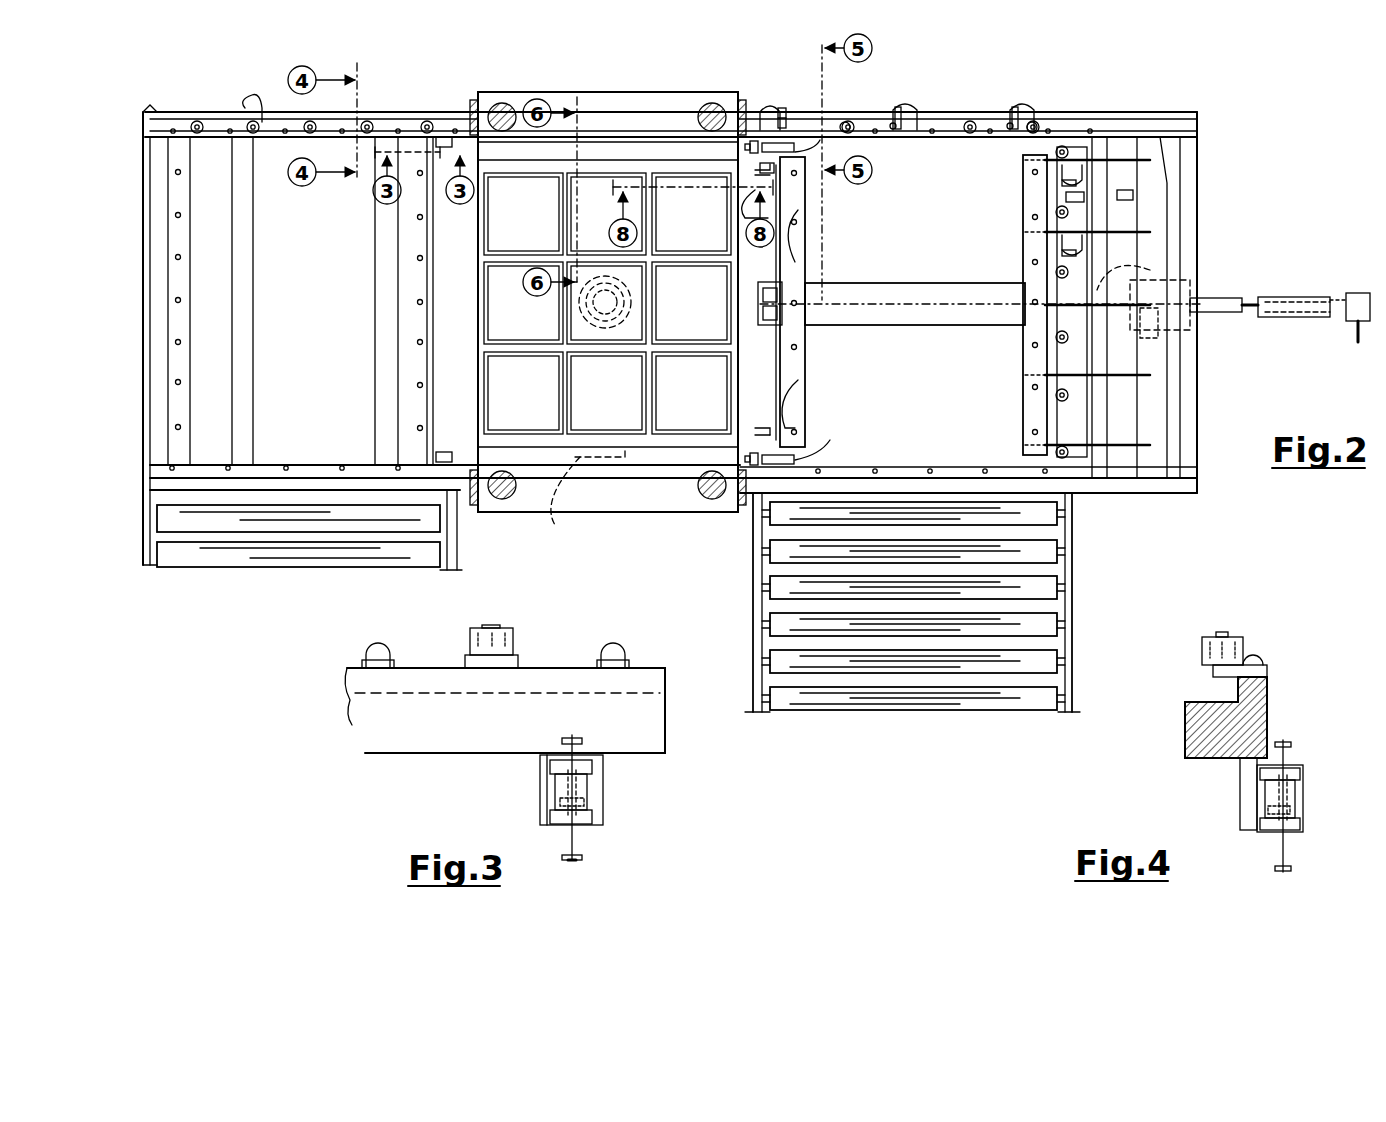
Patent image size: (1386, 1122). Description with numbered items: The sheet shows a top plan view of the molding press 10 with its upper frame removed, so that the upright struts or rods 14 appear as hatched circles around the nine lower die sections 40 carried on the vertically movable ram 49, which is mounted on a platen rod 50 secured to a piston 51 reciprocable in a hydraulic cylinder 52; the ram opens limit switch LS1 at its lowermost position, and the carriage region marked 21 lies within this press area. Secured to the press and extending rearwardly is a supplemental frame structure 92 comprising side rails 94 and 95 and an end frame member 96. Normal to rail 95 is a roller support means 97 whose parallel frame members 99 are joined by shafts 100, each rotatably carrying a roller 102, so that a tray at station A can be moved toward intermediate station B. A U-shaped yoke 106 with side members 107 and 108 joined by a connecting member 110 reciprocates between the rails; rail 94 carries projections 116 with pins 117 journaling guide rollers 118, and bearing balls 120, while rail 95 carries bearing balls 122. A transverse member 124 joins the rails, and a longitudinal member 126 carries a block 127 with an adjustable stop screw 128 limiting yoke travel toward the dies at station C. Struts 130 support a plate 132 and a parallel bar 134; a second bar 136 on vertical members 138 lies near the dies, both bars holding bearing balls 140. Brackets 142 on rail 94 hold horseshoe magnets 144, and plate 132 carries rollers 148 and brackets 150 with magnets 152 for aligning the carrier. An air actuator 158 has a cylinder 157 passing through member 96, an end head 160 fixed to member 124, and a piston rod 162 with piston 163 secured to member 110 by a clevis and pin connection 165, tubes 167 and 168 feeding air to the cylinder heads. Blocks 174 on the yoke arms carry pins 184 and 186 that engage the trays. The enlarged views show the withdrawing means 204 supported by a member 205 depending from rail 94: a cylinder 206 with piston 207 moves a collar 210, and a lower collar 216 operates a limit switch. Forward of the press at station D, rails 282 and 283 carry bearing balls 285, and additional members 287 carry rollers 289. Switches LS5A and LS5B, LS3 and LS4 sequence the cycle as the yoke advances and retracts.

In FIG. 2, the molding press 10 is at (578, 95).
In FIG. 2, the frame members, struts or rods 14 is at (500, 103).
In FIG. 2, the carriage frame 21 is at (470, 255).
In FIG. 2, the lower die sections 40 is at (535, 226).
In FIG. 2, the vertically movable ram 49 is at (468, 332).
In FIG. 2, the platen rod 50 is at (628, 288).
In FIG. 2, the piston 51 is at (620, 308).
In FIG. 2, the cylinder 52 is at (625, 300).
In FIG. 2, the supplemental frame structure 92 is at (965, 105).
In FIG. 2, the side frame member or rail 94 is at (1050, 125).
In FIG. 3, the side frame member or rail 94 is at (655, 735).
In FIG. 4, the side frame member or rail 94 is at (1185, 730).
In FIG. 2, the side frame member or rail 95 is at (1152, 485).
In FIG. 2, the end frame member 96 is at (1190, 165).
In FIG. 2, the roller support means 97 is at (1078, 572).
In FIG. 2, the parallel frame members 99 is at (760, 536).
In FIG. 2, the bars or shafts 100 is at (765, 555).
In FIG. 2, the roller 102 is at (1030, 630).
In FIG. 2, the movable frame or yoke 106 is at (1012, 462).
In FIG. 2, the side member 107 is at (935, 145).
In FIG. 2, the side member 108 is at (918, 466).
In FIG. 2, the connecting member 110 is at (1100, 355).
In FIG. 4, the spaced projections 116 is at (1213, 670).
In FIG. 4, the pins 117 is at (1238, 610).
In FIG. 2, the guide rollers 118 is at (262, 95).
In FIG. 3, the guide rollers 118 is at (445, 628).
In FIG. 4, the guide rollers 118 is at (1202, 640).
In FIG. 2, the bearing balls 120 is at (930, 110).
In FIG. 3, the bearing balls 120 is at (408, 628).
In FIG. 4, the bearing balls 120 is at (1288, 612).
In FIG. 2, the bearing balls 122 is at (892, 448).
In FIG. 2, the transverse frame member 124 is at (1160, 350).
In FIG. 2, the frame member 126 is at (930, 295).
In FIG. 2, the block 127 is at (798, 347).
In FIG. 2, the adjustable stop screw or abutment 128 is at (785, 290).
In FIG. 2, the horizontal struts 130 is at (1160, 165).
In FIG. 2, the plate or member 132 is at (1085, 395).
In FIG. 2, the strip or bar 134 is at (1050, 205).
In FIG. 2, the second strip or bar 136 is at (800, 364).
In FIG. 2, the vertical frame members 138 is at (750, 208).
In FIG. 2, the bearing ball 140 is at (798, 220).
In FIG. 2, the brackets 142 is at (775, 112).
In FIG. 2, the magnet 144 is at (765, 108).
In FIG. 2, the rollers 148 is at (1085, 150).
In FIG. 2, the brackets 150 is at (1062, 160).
In FIG. 2, the magnet 152 is at (1065, 178).
In FIG. 2, the cylinder 157 is at (1200, 298).
In FIG. 2, the air actuator 158 is at (1355, 292).
In FIG. 2, the end head 160 is at (1150, 262).
In FIG. 2, the piston rod 162 is at (1285, 297).
In FIG. 2, the piston 163 is at (1335, 297).
In FIG. 2, the clevis and pin connection 165 is at (1100, 245).
In FIG. 2, the fluid conveying tube 167 is at (1165, 335).
In FIG. 2, the fluid conveying tube 168 is at (1355, 330).
In FIG. 2, the block 174 is at (834, 299).
In FIG. 2, the tray-engaging pin 184 is at (760, 165).
In FIG. 2, the tray-engaging pin 186 is at (762, 148).
In FIG. 2, the pin withdrawing means 204 is at (445, 137).
In FIG. 3, the pin withdrawing means 204 is at (540, 785).
In FIG. 4, the pin withdrawing means 204 is at (1310, 780).
In FIG. 3, the member 205 is at (540, 800).
In FIG. 4, the member 205 is at (1243, 800).
In FIG. 3, the cylinder 206 is at (592, 785).
In FIG. 4, the cylinder 206 is at (1298, 790).
In FIG. 3, the piston 207 is at (590, 800).
In FIG. 4, the piston 207 is at (1296, 804).
In FIG. 3, the collar 210 is at (585, 738).
In FIG. 4, the collar 210 is at (1275, 740).
In FIG. 3, the collar 216 is at (582, 858).
In FIG. 4, the collar 216 is at (1276, 866).
In FIG. 2, the side rails 282 is at (218, 118).
In FIG. 2, the rails 283 is at (175, 192).
In FIG. 2, the bearing balls 285 is at (228, 128).
In FIG. 2, the additional frame members 287 is at (150, 300).
In FIG. 2, the anti-friction rollers 289 is at (380, 520).
In FIG. 2, the limit switch LS1 is at (587, 493).
In FIG. 2, the limit switch LS3 is at (778, 170).
In FIG. 2, the limit switch LS4 is at (1130, 195).
In FIG. 2, the limit switch LS5A is at (975, 110).
In FIG. 2, the limit switch LS5B is at (1105, 180).
In FIG. 2, the station A is at (908, 612).
In FIG. 2, the intermediate station B is at (980, 320).
In FIG. 2, the station C is at (622, 405).
In FIG. 2, the station D is at (290, 312).